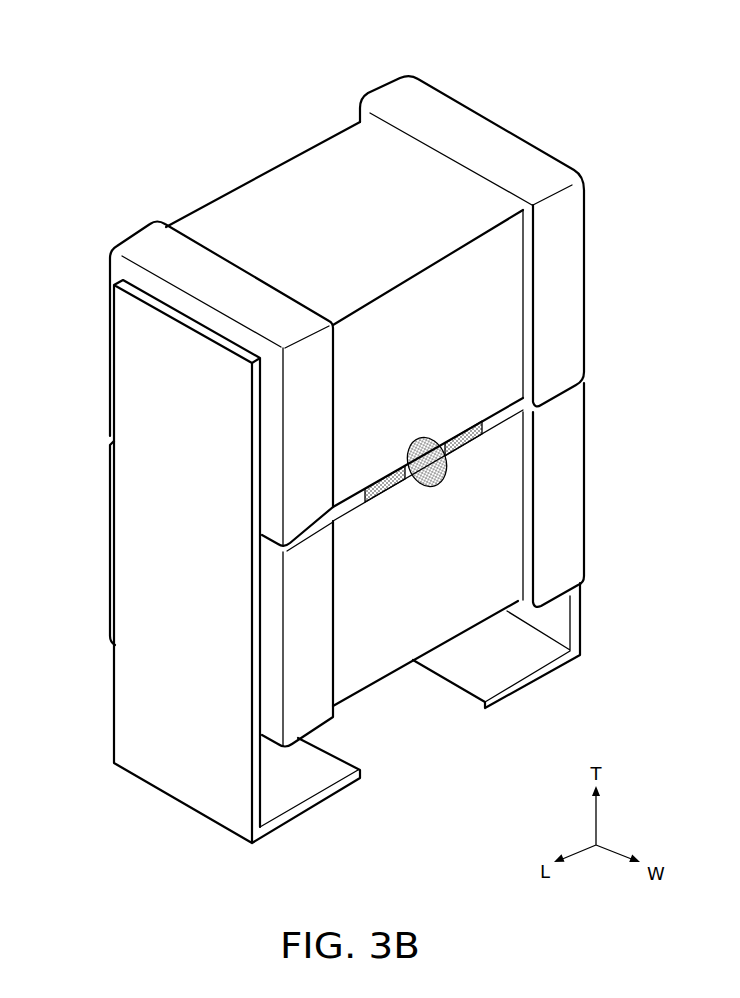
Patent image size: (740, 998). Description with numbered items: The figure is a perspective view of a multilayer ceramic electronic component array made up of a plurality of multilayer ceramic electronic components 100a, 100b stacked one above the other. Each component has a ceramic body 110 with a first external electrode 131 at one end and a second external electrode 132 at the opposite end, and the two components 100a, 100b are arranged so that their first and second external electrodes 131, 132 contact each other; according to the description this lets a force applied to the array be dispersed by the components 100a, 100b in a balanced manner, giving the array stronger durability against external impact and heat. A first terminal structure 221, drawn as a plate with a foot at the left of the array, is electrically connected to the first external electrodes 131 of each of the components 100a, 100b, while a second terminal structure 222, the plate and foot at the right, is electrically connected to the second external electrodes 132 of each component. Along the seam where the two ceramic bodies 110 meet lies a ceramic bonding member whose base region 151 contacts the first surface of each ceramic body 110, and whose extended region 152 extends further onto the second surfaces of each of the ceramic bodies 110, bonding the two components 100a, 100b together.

The ceramic body 110 is at (252, 193).
The first external electrode 131 is at (143, 245).
The second external electrode 132 is at (393, 103).
The multilayer ceramic electronic component 100a is at (592, 297).
The multilayer ceramic electronic component 100b is at (592, 488).
The base region 151 is at (393, 480).
The extended region 152 is at (433, 484).
The first terminal structure 221 is at (127, 697).
The second terminal structure 222 is at (581, 604).